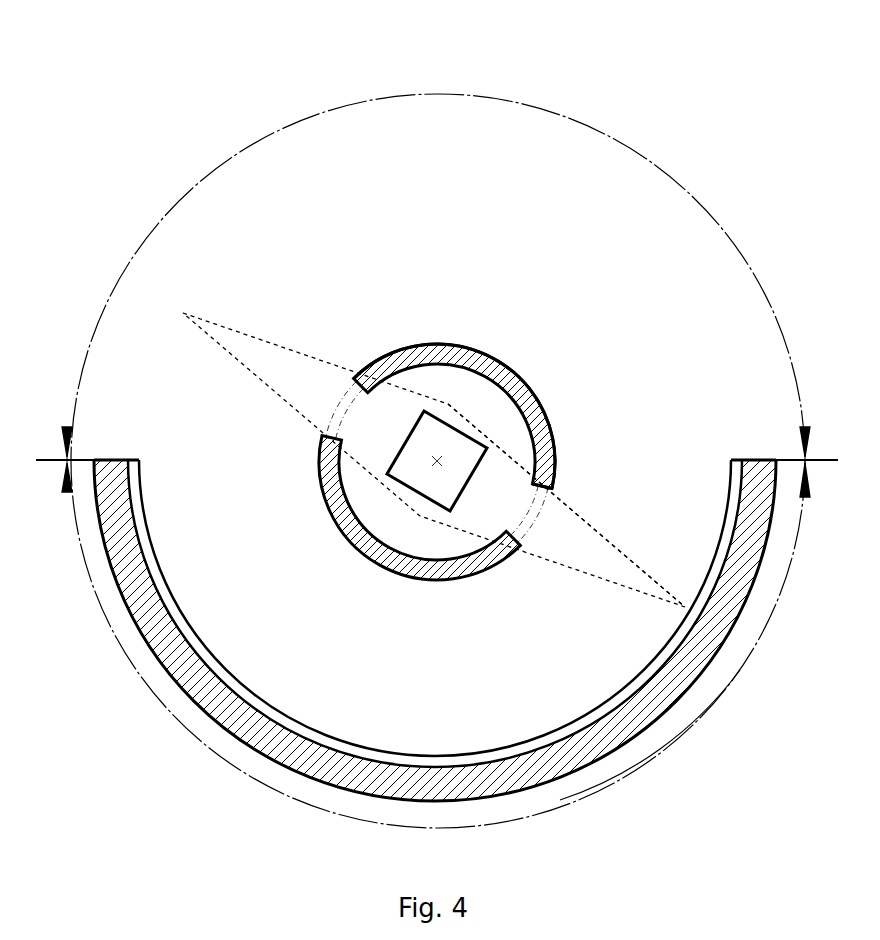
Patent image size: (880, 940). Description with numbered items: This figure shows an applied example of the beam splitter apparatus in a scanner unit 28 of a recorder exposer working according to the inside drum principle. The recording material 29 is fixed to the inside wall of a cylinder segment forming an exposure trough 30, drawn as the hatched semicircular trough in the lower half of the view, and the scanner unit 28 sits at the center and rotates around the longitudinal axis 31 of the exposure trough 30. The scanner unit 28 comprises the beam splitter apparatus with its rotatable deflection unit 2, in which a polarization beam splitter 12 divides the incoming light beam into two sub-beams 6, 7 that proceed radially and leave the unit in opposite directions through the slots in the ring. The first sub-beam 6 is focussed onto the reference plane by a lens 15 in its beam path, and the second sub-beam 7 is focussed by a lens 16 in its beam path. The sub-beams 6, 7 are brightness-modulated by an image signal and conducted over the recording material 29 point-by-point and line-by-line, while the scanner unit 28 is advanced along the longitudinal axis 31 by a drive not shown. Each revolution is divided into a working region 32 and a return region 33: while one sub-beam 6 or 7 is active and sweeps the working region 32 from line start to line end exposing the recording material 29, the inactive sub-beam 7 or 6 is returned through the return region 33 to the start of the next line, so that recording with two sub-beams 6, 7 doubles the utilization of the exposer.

The deflection unit 2 is at (392, 373).
The first sub-beam 6 is at (262, 378).
The second sub-beam 7 is at (600, 533).
The polarization beam splitter 12 is at (484, 380).
The lens 15 is at (336, 382).
The lens 16 is at (541, 468).
The scanner unit 28 is at (375, 581).
The recording material 29 is at (195, 703).
The exposure trough 30 is at (247, 723).
The longitudinal axis 31 is at (436, 455).
The working region 32 is at (653, 750).
The return region 33 is at (528, 103).